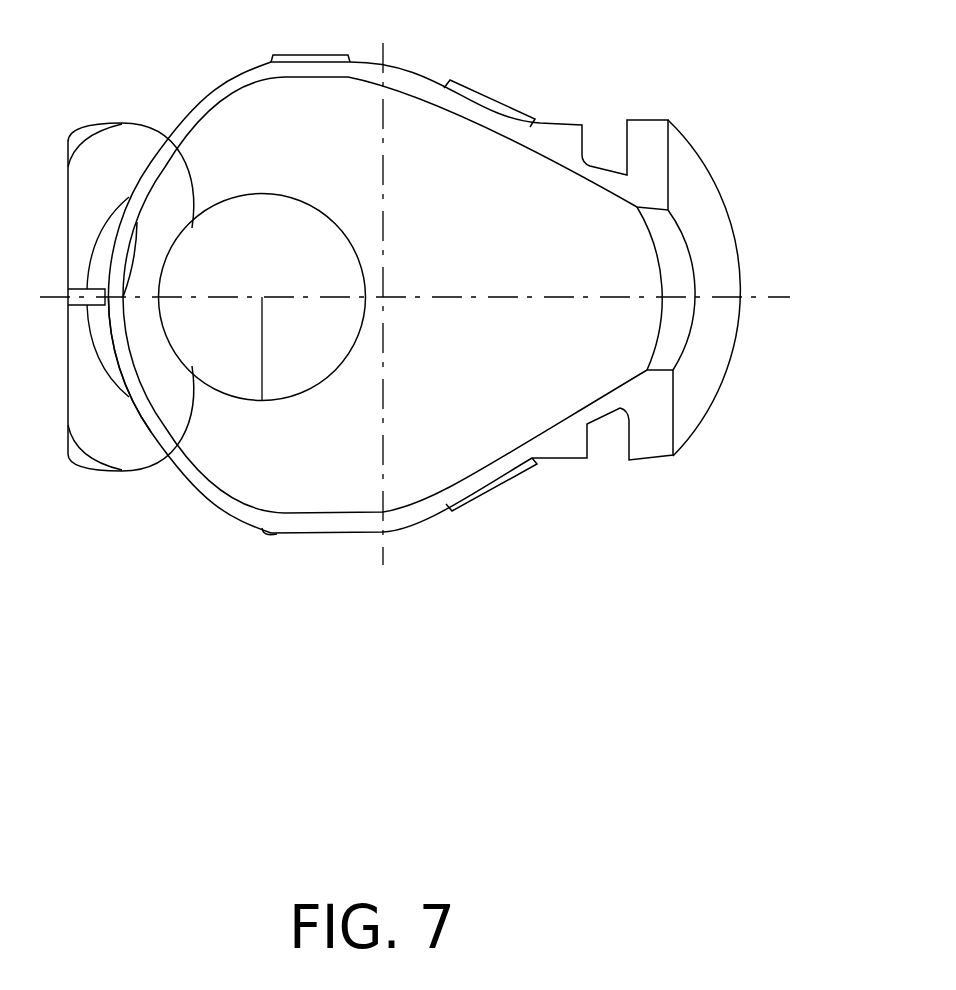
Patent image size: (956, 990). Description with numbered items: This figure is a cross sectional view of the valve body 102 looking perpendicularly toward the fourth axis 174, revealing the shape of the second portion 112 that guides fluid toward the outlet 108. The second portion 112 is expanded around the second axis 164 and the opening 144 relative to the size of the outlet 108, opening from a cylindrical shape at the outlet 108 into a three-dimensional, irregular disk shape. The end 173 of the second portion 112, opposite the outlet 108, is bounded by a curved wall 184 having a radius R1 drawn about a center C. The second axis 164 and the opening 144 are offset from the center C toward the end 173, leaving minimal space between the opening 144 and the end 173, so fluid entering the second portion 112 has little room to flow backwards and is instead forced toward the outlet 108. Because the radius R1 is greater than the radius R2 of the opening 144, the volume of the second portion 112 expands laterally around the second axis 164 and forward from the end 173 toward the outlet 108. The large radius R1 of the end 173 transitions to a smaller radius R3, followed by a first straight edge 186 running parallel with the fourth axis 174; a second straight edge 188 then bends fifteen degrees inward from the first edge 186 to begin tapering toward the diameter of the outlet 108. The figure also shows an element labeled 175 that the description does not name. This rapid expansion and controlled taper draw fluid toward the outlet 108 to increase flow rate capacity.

The valve body 102 is at (580, 530).
The outlet 108 is at (682, 265).
The second portion 112 is at (611, 343).
The opening 144 is at (188, 218).
The second axis 164 is at (240, 277).
The end 173 is at (130, 337).
The fourth axis 174 is at (743, 297).
The top rib 175 is at (231, 92).
The curved wall 184 is at (183, 448).
The first straight edge 186 is at (302, 512).
The second straight edge 188 is at (402, 508).
The radius of the curved wall R1 is at (172, 416).
The radius of the opening R2 is at (262, 297).
The transition radius R3 is at (353, 514).
The center C is at (388, 293).